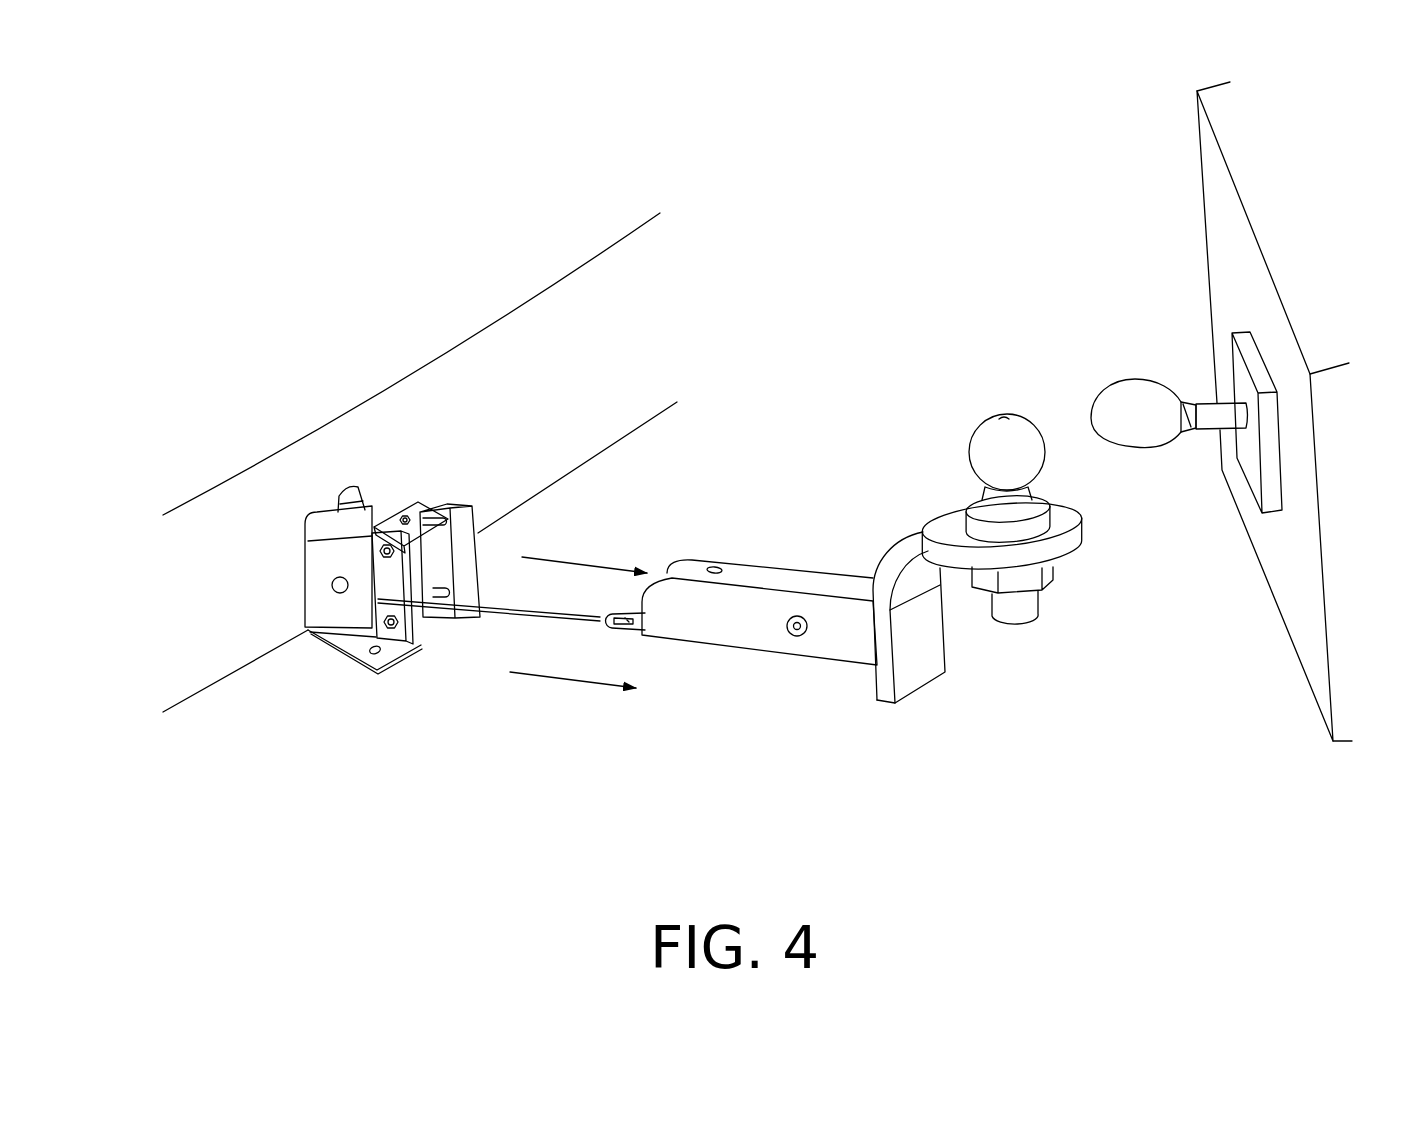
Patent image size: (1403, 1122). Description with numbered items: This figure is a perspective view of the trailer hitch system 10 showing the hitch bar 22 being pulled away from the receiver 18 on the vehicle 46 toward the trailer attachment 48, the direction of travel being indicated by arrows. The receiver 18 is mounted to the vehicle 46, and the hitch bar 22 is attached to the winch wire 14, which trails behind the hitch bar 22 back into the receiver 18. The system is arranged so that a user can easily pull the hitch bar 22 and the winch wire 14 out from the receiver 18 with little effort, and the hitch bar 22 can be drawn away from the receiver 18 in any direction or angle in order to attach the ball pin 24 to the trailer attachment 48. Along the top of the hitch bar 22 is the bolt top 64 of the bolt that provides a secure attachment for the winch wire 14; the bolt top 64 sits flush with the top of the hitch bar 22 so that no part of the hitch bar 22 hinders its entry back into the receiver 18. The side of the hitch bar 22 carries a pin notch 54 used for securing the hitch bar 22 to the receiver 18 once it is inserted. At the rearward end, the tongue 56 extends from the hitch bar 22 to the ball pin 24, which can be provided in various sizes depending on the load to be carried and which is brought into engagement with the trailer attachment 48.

The trailer hitch system 10 is at (653, 750).
The winch wire 14 is at (517, 612).
The receiver 18 is at (360, 607).
The hitch bar 22 is at (772, 551).
The ball pin 24 is at (1003, 443).
The vehicle 46 is at (487, 390).
The trailer attachment 48 is at (1135, 415).
The pin notch 54 is at (800, 628).
The tongue 56 is at (903, 637).
The bolt top 64 is at (708, 562).